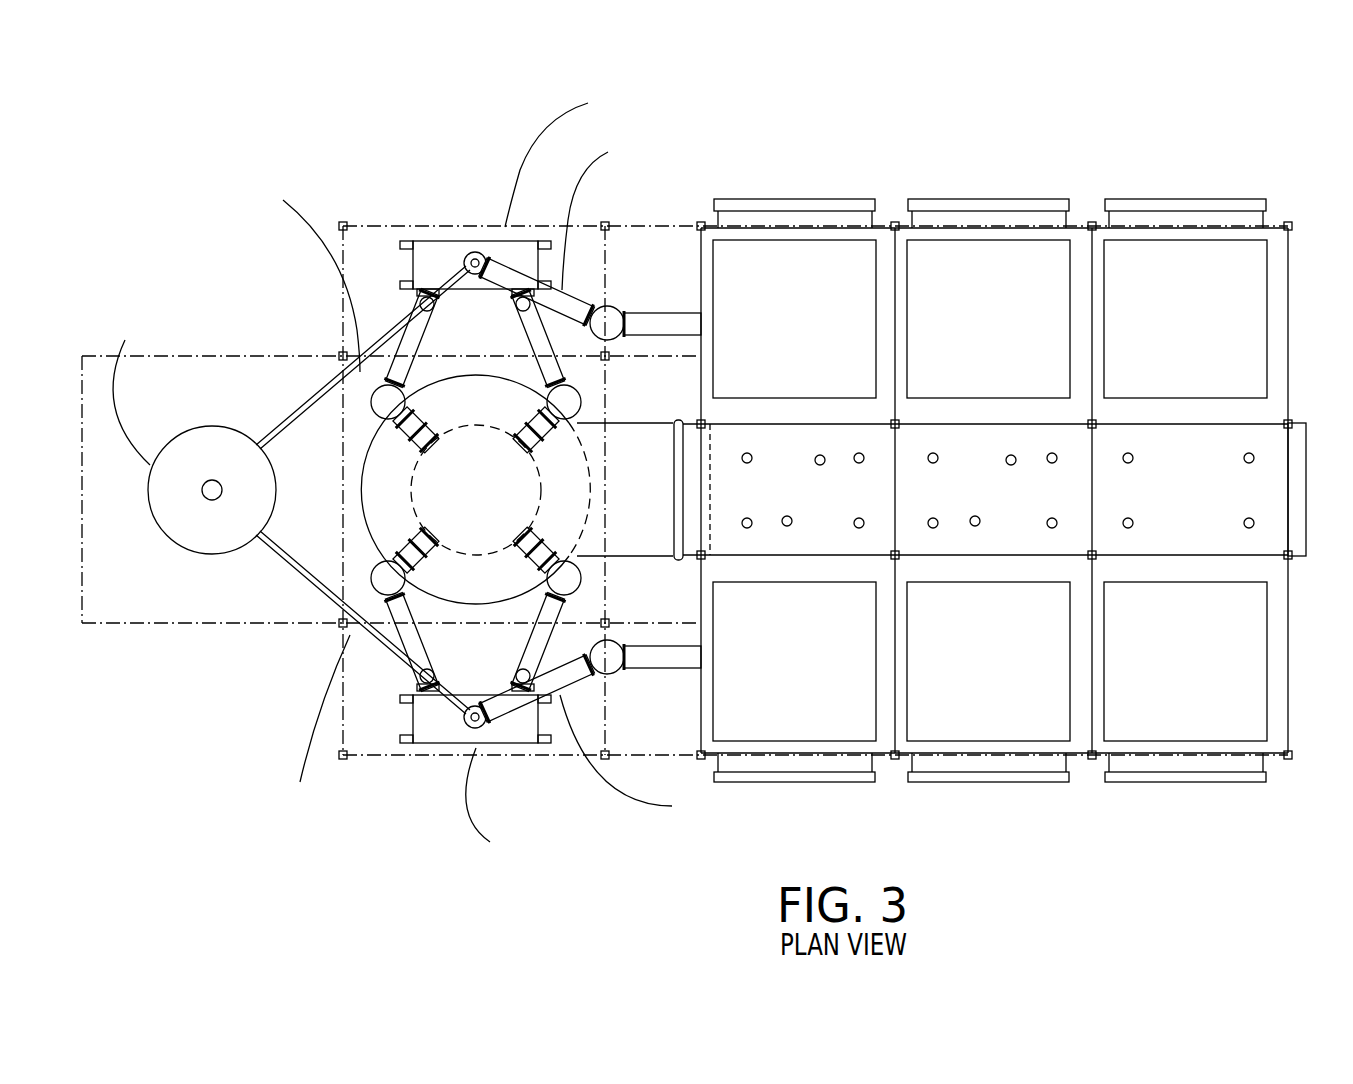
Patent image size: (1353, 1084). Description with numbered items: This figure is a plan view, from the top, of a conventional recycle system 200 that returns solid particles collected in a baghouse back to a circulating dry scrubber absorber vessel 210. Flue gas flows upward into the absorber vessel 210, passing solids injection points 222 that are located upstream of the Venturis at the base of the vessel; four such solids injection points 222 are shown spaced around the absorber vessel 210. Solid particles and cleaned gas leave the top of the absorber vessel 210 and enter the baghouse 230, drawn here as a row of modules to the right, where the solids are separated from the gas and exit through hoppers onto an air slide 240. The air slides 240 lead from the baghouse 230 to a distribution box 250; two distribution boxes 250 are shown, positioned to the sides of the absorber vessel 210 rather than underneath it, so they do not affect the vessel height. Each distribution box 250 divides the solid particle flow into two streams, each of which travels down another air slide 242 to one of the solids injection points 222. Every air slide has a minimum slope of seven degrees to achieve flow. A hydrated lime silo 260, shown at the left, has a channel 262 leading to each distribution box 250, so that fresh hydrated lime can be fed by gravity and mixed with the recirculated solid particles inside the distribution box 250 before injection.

The recycle system 200 is at (367, 150).
The circulating dry scrubber absorber vessel 210 is at (390, 498).
The solids injection points 222 is at (533, 457).
The baghouse 230 is at (1010, 704).
The air slide 240 is at (575, 292).
The air slide 242 is at (537, 342).
The distribution box 250 is at (448, 255).
The hydrated lime silo 260 is at (175, 518).
The channel 262 is at (310, 592).